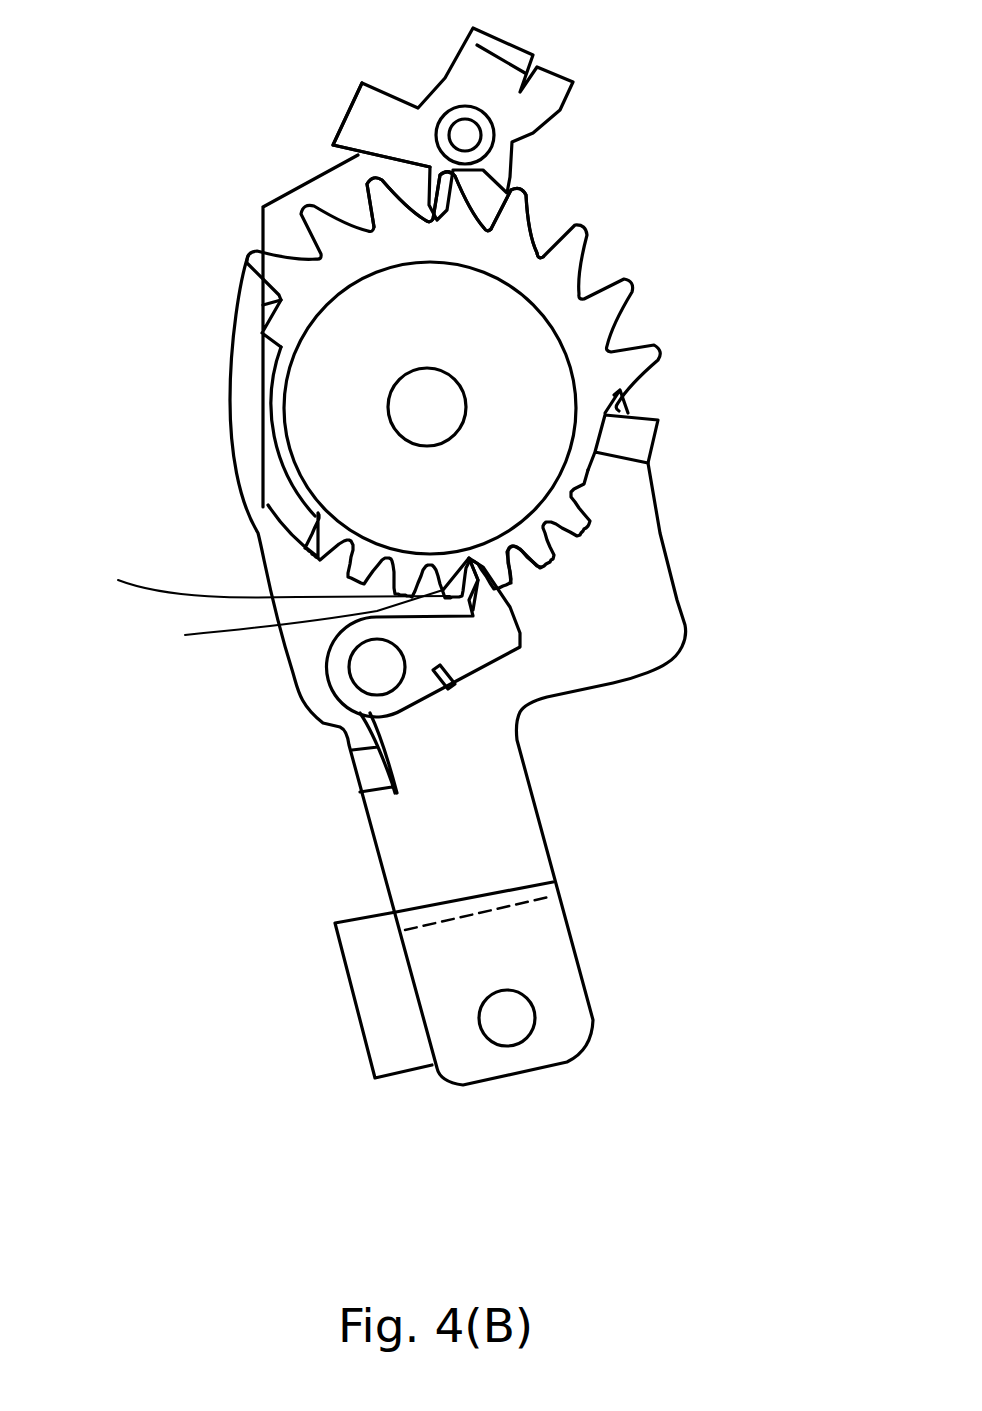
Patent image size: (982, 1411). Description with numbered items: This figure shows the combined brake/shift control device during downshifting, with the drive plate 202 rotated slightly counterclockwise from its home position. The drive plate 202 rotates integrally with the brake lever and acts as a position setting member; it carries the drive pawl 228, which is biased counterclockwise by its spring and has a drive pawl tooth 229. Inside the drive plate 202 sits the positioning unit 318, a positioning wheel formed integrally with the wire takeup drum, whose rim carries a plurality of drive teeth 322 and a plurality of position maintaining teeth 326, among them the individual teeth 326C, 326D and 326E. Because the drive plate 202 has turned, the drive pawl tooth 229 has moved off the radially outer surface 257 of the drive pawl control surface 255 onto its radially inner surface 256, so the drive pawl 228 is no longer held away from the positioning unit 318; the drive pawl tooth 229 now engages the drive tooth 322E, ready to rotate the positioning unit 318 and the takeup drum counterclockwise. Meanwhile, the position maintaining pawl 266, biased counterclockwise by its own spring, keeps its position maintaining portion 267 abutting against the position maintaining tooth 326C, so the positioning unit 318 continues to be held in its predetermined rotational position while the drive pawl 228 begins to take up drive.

The drive plate 202 is at (395, 838).
The drive pawl 228 is at (340, 675).
The drive pawl tooth 229 is at (493, 630).
The drive pawl control surface 255 is at (280, 620).
The radially inner surface 256 is at (478, 562).
The radially outer surface 257 is at (252, 577).
The position maintaining pawl 266 is at (430, 92).
The position maintaining portion 267 is at (340, 132).
The positioning unit 318 is at (503, 370).
The drive teeth 322 is at (601, 528).
The drive tooth 322E is at (493, 559).
The position maintaining teeth 326 is at (672, 268).
The position maintaining tooth 326C is at (385, 201).
The gear tooth 326D is at (463, 187).
The gear tooth 326E is at (530, 212).